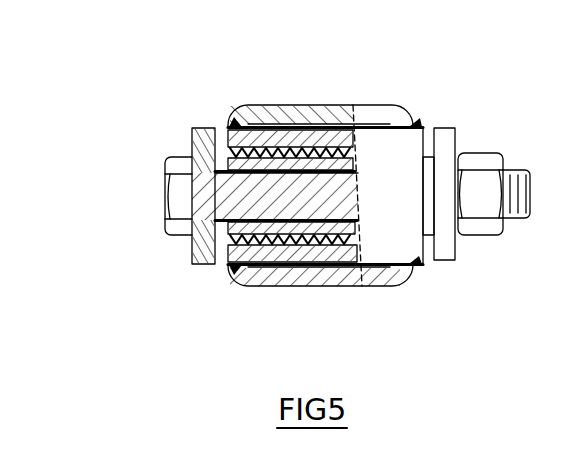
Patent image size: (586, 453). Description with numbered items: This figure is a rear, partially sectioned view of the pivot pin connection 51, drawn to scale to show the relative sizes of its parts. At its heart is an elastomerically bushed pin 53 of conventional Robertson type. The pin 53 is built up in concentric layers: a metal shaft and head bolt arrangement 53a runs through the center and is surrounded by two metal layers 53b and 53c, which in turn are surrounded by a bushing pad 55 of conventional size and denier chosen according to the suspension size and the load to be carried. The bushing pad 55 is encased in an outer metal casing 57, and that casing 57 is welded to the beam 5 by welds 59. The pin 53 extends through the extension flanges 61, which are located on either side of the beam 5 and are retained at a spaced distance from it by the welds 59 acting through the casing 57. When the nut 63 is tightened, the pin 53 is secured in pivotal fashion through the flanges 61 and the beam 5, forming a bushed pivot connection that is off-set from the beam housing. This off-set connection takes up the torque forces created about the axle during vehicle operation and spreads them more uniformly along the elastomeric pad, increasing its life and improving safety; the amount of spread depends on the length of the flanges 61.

The beam 5 is at (385, 113).
The pivot pin connection 51 is at (450, 108).
The elastomerically bushed pin 53 is at (129, 215).
The metal shaft and head bolt arrangement 53a is at (217, 203).
The metal layer 53b is at (354, 170).
The metal layer 53c is at (355, 228).
The bushing pad 55 is at (205, 264).
The outer metal casing 57 is at (402, 232).
The welds 59 is at (234, 116).
The extension flanges 61 is at (200, 248).
The nut 63 is at (478, 157).